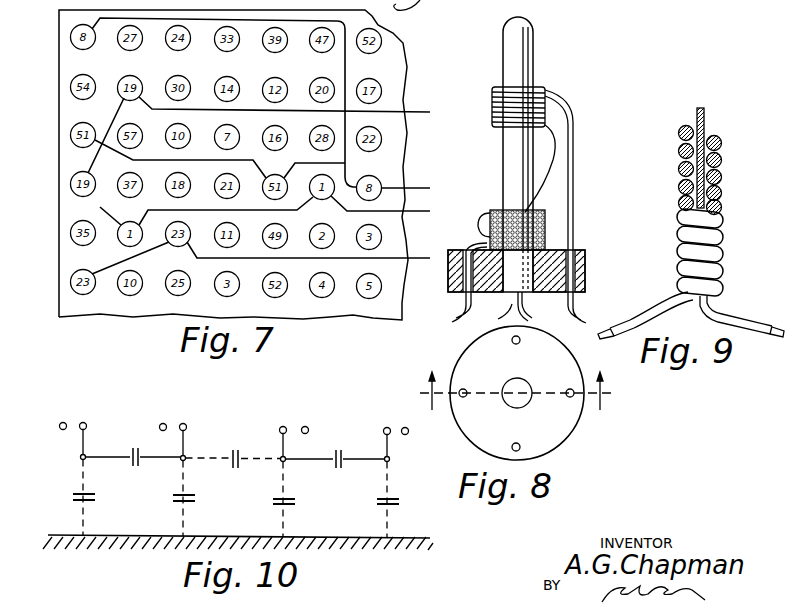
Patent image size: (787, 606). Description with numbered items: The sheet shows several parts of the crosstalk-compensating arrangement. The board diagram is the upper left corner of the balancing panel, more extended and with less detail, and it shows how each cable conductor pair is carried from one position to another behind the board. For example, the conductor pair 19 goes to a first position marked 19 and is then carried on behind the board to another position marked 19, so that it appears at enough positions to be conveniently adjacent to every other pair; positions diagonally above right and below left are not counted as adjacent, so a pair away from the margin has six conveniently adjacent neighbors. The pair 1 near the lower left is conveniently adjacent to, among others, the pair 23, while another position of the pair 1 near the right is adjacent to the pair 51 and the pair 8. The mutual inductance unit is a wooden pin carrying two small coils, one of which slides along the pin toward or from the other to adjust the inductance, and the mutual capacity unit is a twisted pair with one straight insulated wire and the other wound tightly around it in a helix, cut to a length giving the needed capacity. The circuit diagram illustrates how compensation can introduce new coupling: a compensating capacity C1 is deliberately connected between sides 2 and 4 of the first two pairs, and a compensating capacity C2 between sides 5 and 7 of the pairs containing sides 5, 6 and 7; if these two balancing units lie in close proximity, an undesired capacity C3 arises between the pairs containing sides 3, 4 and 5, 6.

In FIG. 7, the conductor pair 8 is at (70, 36).
In FIG. 10, the conductor pair 8 is at (405, 422).
In FIG. 7, the conductor pair 51 is at (70, 135).
In FIG. 7, the conductor pair 19 is at (70, 184).
In FIG. 7, the conductor pair 1 is at (100, 207).
In FIG. 10, the conductor pair 1 is at (61, 419).
In FIG. 7, the conductor pair 23 is at (70, 282).
In FIG. 10, the conductor side 2 is at (84, 432).
In FIG. 10, the conductor side 3 is at (161, 420).
In FIG. 10, the conductor side 4 is at (184, 433).
In FIG. 10, the conductor side 5 is at (282, 434).
In FIG. 10, the conductor side 6 is at (305, 421).
In FIG. 10, the conductor side 7 is at (384, 435).
In FIG. 10, the compensating capacity C1 is at (133, 469).
In FIG. 10, the compensating capacity C2 is at (335, 473).
In FIG. 10, the undesired capacity C3 is at (233, 472).